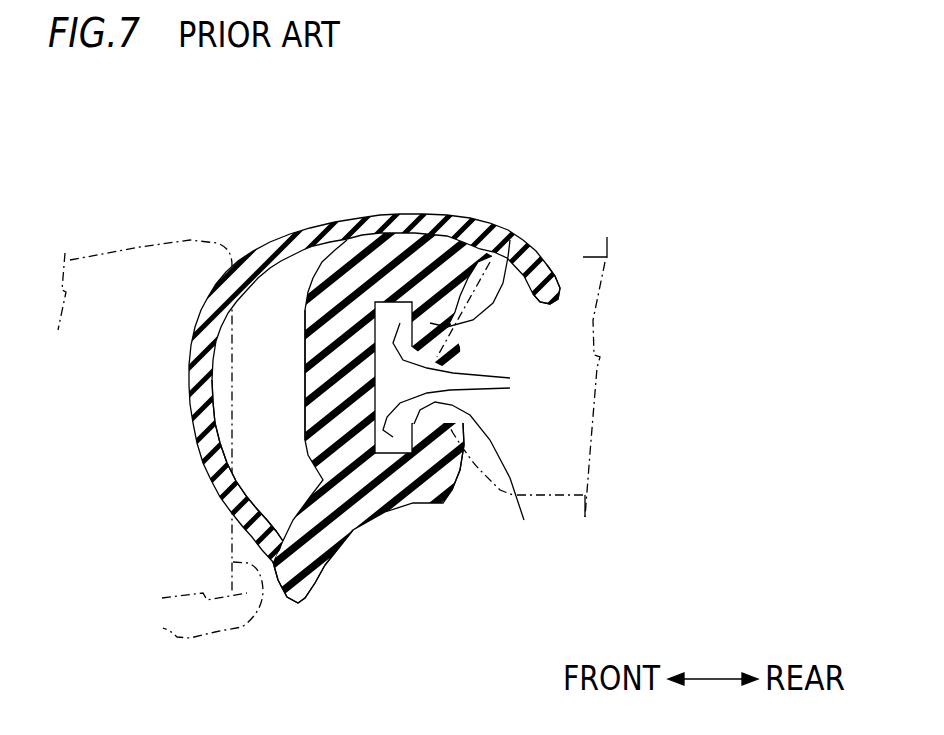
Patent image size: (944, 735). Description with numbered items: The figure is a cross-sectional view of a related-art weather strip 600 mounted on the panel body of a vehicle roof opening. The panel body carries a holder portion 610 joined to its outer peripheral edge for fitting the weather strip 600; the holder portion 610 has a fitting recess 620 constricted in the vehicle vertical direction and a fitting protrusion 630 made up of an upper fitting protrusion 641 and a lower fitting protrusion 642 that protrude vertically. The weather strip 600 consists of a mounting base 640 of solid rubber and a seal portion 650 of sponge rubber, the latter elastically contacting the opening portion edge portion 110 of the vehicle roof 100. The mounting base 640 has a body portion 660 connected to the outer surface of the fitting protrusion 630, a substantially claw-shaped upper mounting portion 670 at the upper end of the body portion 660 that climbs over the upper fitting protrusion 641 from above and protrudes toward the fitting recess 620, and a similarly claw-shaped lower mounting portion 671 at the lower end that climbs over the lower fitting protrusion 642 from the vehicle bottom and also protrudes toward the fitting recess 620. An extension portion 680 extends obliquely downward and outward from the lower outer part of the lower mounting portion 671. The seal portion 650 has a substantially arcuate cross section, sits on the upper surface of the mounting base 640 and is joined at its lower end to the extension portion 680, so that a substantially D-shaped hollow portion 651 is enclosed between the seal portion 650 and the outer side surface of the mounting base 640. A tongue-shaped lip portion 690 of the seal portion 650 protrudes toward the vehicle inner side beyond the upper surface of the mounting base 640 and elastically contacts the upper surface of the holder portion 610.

The vehicle roof 100 is at (140, 247).
The opening portion edge portion 110 is at (163, 628).
The weather strip 600 is at (350, 192).
The holder portion 610 is at (587, 253).
The fitting recess 620 is at (524, 520).
The fitting protrusion 630 is at (723, 323).
The mounting base 640 is at (403, 267).
The upper fitting protrusion 641 is at (510, 378).
The lower fitting protrusion 642 is at (510, 388).
The seal portion 650 is at (273, 247).
The hollow portion 651 is at (262, 443).
The body portion 660 is at (337, 388).
The upper mounting portion 670 is at (510, 240).
The lower mounting portion 671 is at (443, 465).
The extension portion 680 is at (308, 560).
The lip portion 690 is at (545, 287).